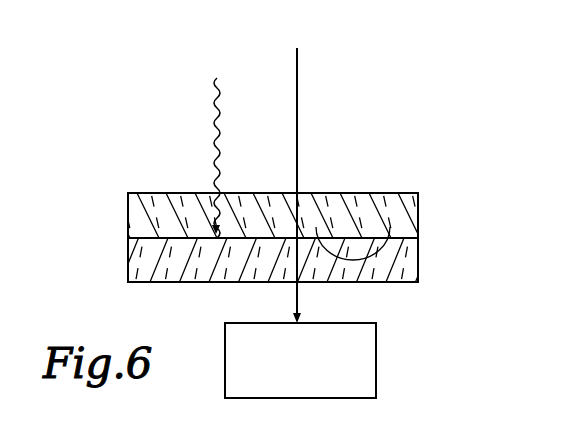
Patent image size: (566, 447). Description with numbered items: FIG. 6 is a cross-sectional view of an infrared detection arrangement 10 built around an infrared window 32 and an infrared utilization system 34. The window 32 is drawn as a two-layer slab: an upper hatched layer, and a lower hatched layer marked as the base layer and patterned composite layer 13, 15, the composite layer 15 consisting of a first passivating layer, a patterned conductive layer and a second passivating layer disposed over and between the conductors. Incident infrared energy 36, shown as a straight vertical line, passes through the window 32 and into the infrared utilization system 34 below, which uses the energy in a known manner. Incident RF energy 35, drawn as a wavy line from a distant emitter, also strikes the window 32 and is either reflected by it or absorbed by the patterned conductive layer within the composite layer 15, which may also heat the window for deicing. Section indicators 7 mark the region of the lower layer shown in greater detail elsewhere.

The region of infrared transmission 7 is at (319, 224).
The infrared window device 10 is at (302, 221).
The substrate layer 13 is at (328, 246).
The patterned composite layer 15 is at (427, 237).
The infrared window 32 is at (181, 187).
The infrared utilization system 34 is at (378, 351).
The incident RF energy 35 is at (212, 94).
The incident infrared energy 36 is at (297, 80).